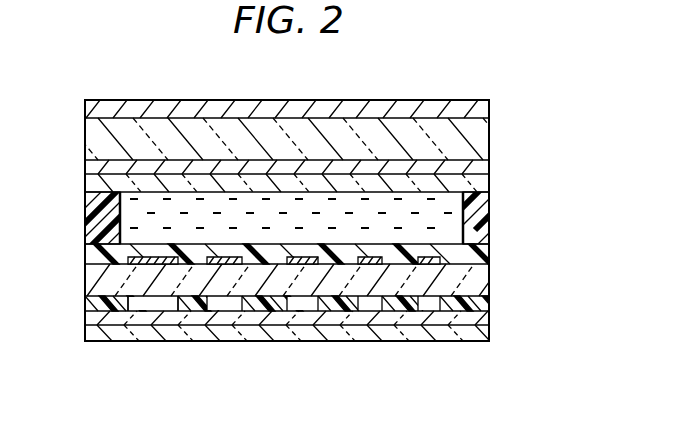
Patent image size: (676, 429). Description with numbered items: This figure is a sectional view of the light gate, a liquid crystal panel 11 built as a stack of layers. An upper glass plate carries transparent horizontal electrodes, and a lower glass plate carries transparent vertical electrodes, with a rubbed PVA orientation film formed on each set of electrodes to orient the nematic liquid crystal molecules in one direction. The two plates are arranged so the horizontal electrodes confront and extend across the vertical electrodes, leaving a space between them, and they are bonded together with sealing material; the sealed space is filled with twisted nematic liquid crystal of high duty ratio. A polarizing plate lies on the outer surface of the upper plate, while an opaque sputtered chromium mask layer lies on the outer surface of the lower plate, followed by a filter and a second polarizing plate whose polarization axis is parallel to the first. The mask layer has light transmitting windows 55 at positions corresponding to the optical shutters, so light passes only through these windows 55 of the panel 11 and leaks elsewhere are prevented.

The liquid crystal panel 11 is at (286, 346).
The light transmitting windows 55 is at (150, 303).